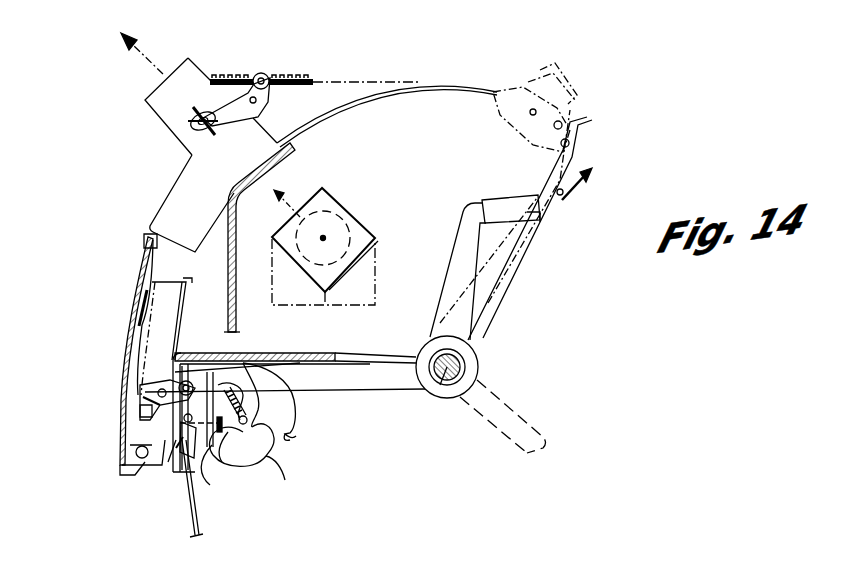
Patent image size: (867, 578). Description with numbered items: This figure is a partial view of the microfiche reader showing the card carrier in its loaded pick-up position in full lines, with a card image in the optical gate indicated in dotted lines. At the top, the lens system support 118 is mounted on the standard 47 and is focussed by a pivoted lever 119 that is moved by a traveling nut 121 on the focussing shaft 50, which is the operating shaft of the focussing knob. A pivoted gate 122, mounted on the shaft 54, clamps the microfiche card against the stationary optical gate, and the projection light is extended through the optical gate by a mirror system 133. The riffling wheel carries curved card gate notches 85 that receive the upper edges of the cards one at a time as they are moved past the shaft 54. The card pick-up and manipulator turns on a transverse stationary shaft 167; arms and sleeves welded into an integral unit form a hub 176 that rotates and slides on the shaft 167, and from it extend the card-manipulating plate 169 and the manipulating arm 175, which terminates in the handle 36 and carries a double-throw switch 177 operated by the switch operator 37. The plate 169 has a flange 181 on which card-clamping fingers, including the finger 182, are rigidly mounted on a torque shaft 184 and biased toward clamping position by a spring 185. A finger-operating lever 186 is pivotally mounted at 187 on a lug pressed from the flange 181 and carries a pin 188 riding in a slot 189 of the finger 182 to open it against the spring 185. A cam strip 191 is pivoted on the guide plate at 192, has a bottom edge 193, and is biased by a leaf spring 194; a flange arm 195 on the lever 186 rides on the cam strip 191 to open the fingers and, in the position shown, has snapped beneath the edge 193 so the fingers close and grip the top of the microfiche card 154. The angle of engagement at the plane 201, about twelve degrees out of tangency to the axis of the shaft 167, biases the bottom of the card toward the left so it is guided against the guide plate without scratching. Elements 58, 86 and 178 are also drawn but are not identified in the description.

The handle 36 is at (588, 184).
The switch operator 37 is at (583, 171).
The standard 47 is at (168, 194).
The focussing shaft 50 is at (320, 82).
The shaft 54 is at (297, 412).
The spring 58 is at (247, 405).
The card gate notches 85 is at (298, 443).
The cam lobe 86 is at (292, 392).
The lens system support 118 is at (152, 119).
The pivoted lever 119 is at (231, 80).
The traveling nut 121 is at (268, 74).
The pivoted gate 122 is at (256, 204).
The mirror system 133 is at (340, 193).
The microfiche card 154 is at (376, 100).
The transverse stationary shaft 167 is at (443, 380).
The card-manipulating plate 169 is at (290, 355).
The manipulating arm 175 is at (462, 220).
The hub 176 is at (478, 352).
The double-throw switch 177 is at (515, 184).
The link 178 is at (563, 203).
The flange 181 is at (185, 355).
The card-clamping finger 182 is at (182, 463).
The torque shaft 184 is at (160, 460).
The spring 185 is at (220, 448).
The finger-operating lever 186 is at (143, 401).
The pivot 187 is at (147, 395).
The pin 188 is at (262, 368).
The slot 189 is at (225, 355).
The cam strip 191 is at (136, 318).
The pivot 192 is at (137, 465).
The bottom edge 193 is at (140, 414).
The leaf spring 194 is at (153, 275).
The flange arm 195 is at (143, 438).
The plane 201 is at (180, 467).